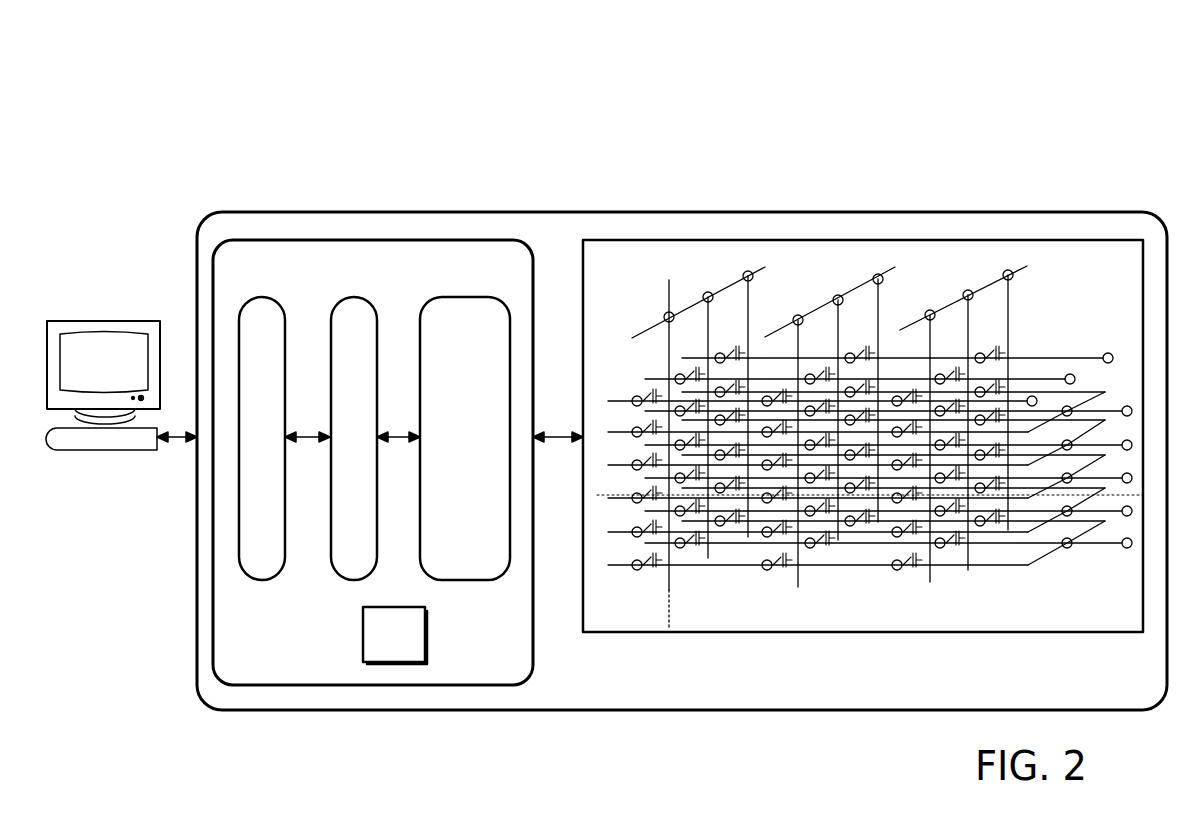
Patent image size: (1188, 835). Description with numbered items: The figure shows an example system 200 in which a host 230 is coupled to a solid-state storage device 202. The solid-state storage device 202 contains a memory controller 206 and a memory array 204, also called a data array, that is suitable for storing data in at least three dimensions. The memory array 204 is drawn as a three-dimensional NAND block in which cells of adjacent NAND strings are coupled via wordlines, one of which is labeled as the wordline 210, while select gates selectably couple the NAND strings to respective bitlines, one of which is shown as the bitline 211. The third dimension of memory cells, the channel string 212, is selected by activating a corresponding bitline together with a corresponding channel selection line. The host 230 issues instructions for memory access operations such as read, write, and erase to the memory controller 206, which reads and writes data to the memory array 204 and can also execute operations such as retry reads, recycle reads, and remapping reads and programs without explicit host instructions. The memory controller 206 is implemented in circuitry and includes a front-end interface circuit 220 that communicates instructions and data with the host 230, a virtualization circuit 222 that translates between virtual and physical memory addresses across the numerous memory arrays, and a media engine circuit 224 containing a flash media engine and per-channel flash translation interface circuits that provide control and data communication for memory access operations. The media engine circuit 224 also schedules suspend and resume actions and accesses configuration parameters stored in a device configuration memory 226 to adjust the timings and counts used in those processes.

The system 200 is at (173, 77).
The solid-state storage device 202 is at (268, 212).
The memory array 204 is at (633, 238).
The memory controller 206 is at (390, 291).
The wordline 210 is at (612, 497).
The bitline 211 is at (987, 295).
The channel string 212 is at (672, 280).
The front-end interface circuit 220 is at (260, 582).
The virtualization circuit 222 is at (353, 582).
The media engine circuit 224 is at (463, 582).
The device configuration memory 226 is at (393, 663).
The host 230 is at (98, 321).